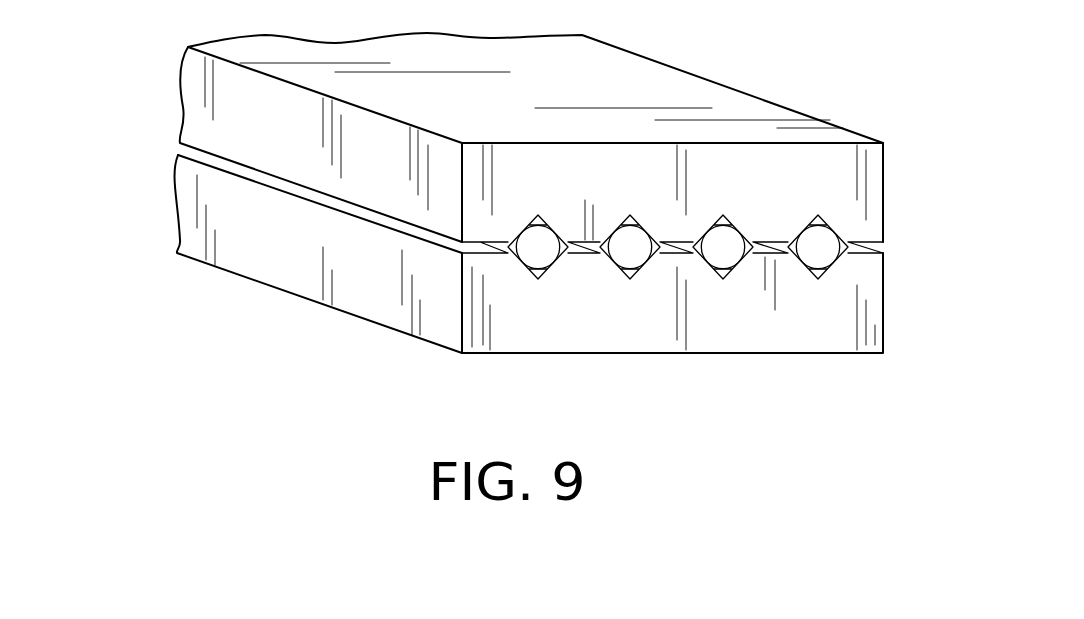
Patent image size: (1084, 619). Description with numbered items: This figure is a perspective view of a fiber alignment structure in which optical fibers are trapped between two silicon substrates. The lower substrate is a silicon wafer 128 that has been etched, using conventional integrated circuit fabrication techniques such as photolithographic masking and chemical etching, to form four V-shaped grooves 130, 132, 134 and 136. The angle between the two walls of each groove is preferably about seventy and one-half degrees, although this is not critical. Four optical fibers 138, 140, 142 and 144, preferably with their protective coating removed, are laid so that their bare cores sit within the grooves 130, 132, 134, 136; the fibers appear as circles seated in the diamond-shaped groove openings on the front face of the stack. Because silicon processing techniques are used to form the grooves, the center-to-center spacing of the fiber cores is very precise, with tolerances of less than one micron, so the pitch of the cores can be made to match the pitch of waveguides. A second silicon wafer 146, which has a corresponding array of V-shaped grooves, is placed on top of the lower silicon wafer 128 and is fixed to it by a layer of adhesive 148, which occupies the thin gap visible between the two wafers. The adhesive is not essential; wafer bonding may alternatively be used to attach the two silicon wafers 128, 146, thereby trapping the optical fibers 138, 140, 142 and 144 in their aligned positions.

The silicon wafer 128 is at (382, 310).
The second silicon wafer 146 is at (193, 92).
The layer of adhesive 148 is at (298, 189).
The V-shaped groove 130 is at (540, 280).
The V-shaped groove 132 is at (633, 280).
The V-shaped groove 134 is at (726, 280).
The V-shaped groove 136 is at (821, 280).
The optical fiber 138 is at (536, 234).
The optical fiber 140 is at (628, 234).
The optical fiber 142 is at (721, 234).
The optical fiber 144 is at (816, 234).